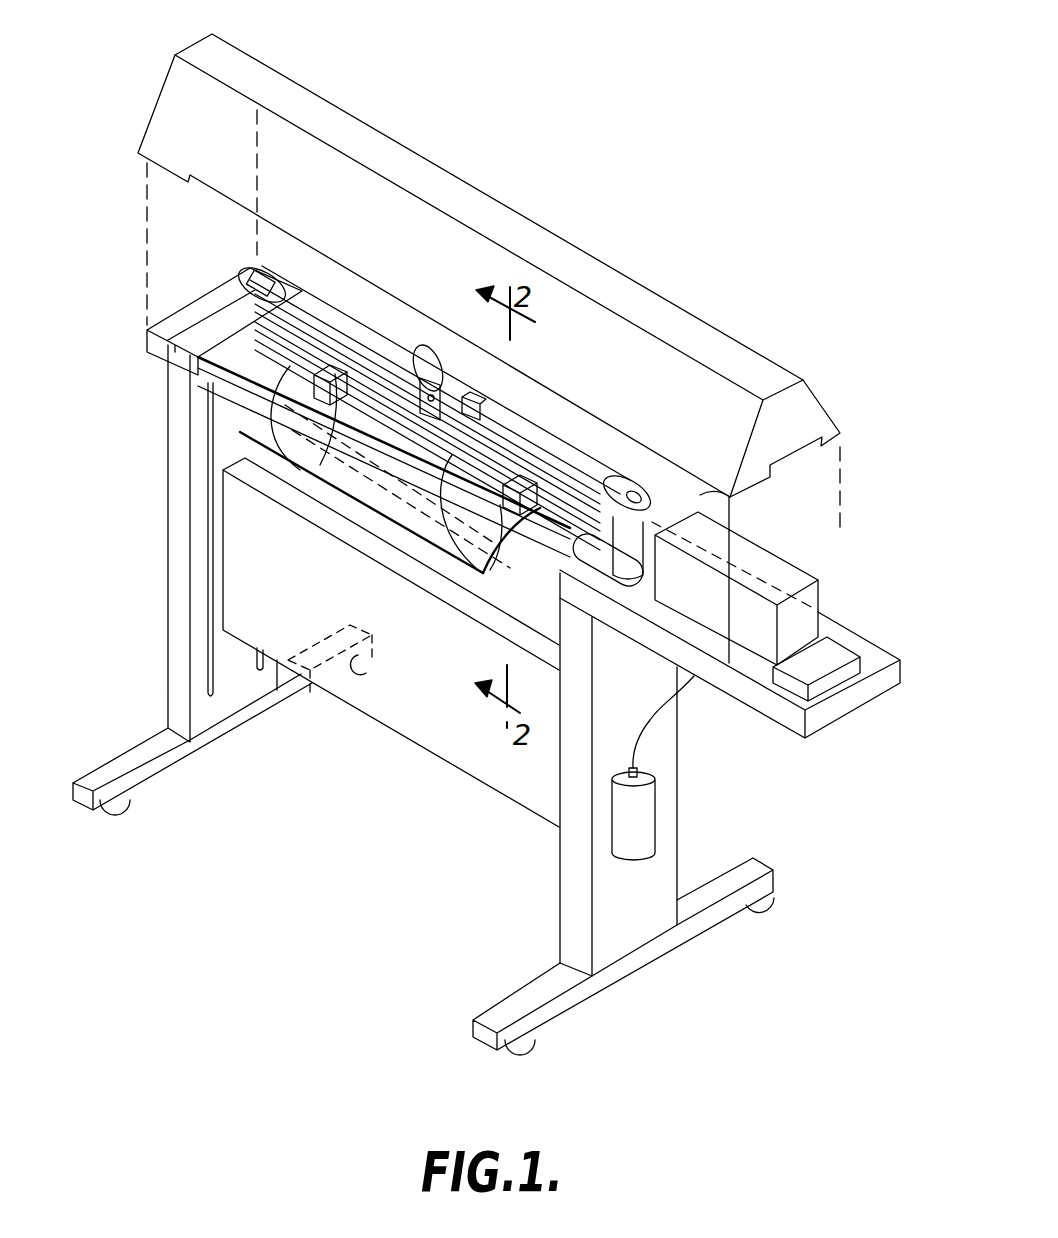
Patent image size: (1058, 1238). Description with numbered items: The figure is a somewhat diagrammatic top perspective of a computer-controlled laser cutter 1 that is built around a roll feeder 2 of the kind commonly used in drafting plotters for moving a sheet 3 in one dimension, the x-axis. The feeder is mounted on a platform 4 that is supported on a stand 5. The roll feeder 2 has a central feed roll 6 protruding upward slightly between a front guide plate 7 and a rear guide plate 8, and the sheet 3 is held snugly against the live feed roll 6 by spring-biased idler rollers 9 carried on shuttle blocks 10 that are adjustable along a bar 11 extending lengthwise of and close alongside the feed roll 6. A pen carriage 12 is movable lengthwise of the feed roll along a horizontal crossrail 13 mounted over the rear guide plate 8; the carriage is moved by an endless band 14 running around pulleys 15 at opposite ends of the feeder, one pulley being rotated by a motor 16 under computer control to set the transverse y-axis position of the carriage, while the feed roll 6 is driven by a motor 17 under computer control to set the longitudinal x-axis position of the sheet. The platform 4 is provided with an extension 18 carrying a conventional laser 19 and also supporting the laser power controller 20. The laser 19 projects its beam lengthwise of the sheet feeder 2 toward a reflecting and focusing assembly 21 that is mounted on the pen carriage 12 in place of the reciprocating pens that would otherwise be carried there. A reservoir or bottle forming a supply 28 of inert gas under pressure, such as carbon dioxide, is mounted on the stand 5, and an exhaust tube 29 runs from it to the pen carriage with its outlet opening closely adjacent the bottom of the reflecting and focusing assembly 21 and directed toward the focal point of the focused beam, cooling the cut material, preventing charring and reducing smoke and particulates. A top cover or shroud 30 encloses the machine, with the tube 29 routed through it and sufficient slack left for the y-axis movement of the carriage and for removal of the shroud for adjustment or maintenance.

The computer-controlled laser cutter 1 is at (200, 284).
The roll feeder 2 is at (203, 380).
The sheet 3 is at (480, 572).
The platform 4 is at (547, 570).
The stand 5 is at (567, 875).
The central feed roll 6 is at (250, 376).
The front guide plate 7 is at (227, 366).
The rear guide plate 8 is at (287, 283).
The spring-biased idler rollers 9 is at (328, 495).
The shuttle blocks 10 is at (313, 478).
The bar 11 is at (403, 518).
The pen carriage 12 is at (478, 398).
The horizontal crossrail 13 is at (523, 436).
The endless band 14 is at (567, 443).
The pulleys 15 is at (240, 275).
The motor 16 is at (653, 513).
The motor 17 is at (610, 582).
The extension 18 is at (787, 723).
The laser 19 is at (772, 565).
The laser power controller 20 is at (833, 653).
The reflecting and focusing assembly 21 is at (435, 360).
The supply of inert gas under pressure 28 is at (645, 818).
The exhaust tube 29 is at (428, 350).
The top cover or shroud 30 is at (723, 348).